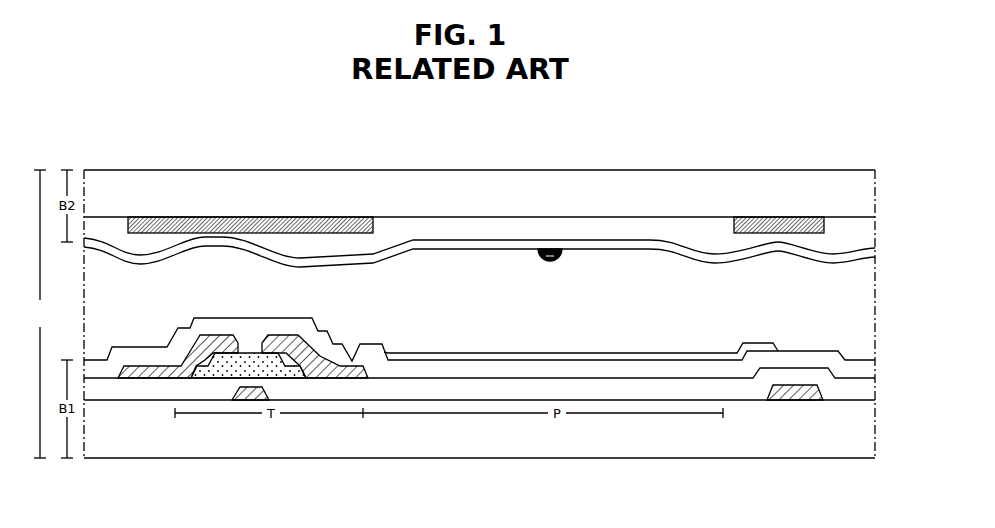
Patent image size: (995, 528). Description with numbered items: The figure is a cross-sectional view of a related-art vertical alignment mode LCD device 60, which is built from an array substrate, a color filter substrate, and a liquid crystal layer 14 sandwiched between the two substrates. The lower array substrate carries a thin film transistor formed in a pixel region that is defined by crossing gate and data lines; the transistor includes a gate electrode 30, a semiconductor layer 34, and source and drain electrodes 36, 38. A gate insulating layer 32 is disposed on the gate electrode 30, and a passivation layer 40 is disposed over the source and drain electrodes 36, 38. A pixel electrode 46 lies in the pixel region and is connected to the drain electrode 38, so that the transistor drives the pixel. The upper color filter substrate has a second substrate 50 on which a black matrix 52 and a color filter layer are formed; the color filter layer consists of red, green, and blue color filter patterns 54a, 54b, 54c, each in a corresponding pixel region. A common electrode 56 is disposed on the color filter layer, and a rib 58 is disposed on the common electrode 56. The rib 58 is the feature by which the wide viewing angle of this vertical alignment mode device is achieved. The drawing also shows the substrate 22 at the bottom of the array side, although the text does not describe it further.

The liquid crystal layer 14 is at (862, 296).
The first substrate 22 is at (829, 442).
The gate electrode 30 is at (247, 401).
The gate insulating layer 32 is at (483, 393).
The semiconductor layer 34 is at (297, 380).
The source electrode 36 is at (222, 335).
The drain electrode 38 is at (288, 335).
The passivation layer 40 is at (497, 359).
The pixel electrode 46 is at (640, 352).
The second substrate 50 is at (820, 194).
The black matrix 52 is at (293, 220).
The red color filter pattern 54a is at (120, 218).
The green color filter pattern 54b is at (516, 228).
The blue color filter pattern 54c is at (858, 222).
The common electrode 56 is at (681, 259).
The rib 58 is at (551, 262).
The VA mode LCD device 60 is at (40, 314).